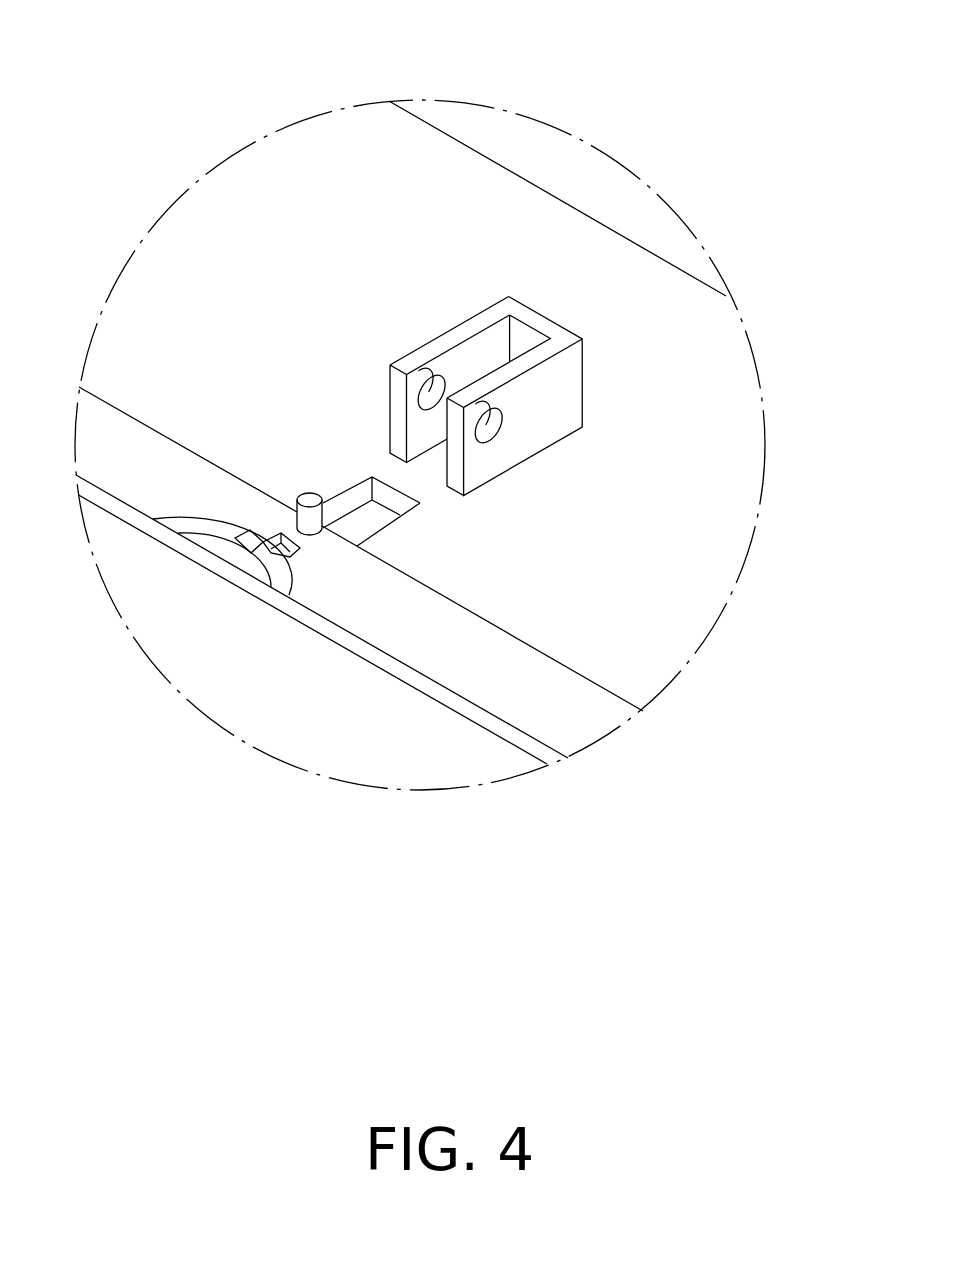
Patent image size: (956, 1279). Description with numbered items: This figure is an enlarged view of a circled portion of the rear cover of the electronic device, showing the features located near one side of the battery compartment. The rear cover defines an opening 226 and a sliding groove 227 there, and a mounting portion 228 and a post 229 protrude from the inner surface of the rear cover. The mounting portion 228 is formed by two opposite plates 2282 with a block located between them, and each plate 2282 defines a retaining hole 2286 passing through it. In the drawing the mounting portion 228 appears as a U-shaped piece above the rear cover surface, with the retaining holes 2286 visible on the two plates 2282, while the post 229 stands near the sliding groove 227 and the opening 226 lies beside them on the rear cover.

The opening 226 is at (253, 566).
The sliding groove 227 is at (367, 522).
The mounting portion 228 is at (523, 249).
The plate 2282 is at (460, 332).
The retaining hole 2286 is at (432, 388).
The post 229 is at (296, 509).